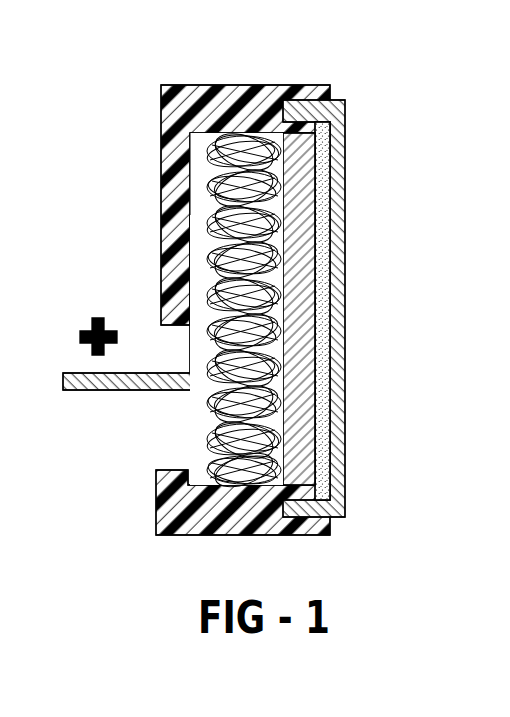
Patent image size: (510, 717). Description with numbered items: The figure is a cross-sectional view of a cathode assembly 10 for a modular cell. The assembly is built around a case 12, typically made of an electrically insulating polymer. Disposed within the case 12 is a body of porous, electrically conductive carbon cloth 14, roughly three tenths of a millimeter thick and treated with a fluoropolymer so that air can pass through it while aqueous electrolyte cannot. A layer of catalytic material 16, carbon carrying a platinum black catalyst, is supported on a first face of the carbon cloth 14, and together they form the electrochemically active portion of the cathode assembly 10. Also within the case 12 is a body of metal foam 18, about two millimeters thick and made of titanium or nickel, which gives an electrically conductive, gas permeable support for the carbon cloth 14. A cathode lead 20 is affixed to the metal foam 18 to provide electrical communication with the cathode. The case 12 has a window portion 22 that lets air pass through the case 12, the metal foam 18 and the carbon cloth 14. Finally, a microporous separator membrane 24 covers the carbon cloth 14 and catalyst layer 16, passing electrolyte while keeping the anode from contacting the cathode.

The cathode assembly 10 is at (146, 81).
The case 12 is at (160, 248).
The carbon cloth 14 is at (293, 140).
The catalytic material 16 is at (322, 283).
The metal foam 18 is at (212, 169).
The cathode lead 20 is at (60, 383).
The window portion 22 is at (133, 318).
The microporous separator membrane 24 is at (337, 480).